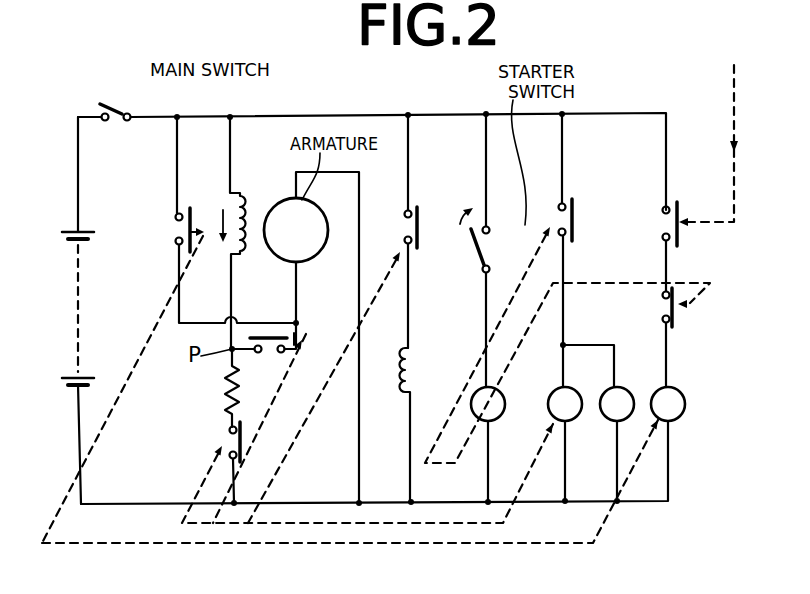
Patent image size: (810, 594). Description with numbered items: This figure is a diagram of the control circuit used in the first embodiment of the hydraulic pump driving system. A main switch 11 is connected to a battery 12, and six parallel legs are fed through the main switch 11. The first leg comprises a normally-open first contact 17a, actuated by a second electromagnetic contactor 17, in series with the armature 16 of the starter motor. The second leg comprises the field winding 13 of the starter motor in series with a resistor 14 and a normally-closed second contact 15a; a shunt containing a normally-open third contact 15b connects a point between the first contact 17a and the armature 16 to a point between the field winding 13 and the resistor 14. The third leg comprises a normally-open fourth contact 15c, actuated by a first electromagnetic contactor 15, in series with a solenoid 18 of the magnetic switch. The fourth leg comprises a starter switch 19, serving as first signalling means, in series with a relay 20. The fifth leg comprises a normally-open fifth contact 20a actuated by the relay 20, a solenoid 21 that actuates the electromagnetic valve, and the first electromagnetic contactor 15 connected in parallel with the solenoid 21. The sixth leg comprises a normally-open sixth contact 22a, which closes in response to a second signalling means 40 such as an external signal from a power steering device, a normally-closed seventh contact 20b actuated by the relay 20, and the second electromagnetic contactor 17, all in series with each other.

The main switch 11 is at (119, 101).
The battery 12 is at (73, 230).
The field winding 13 is at (229, 195).
The resistor 14 is at (229, 385).
The first electromagnetic contactor 15 is at (576, 417).
The second contact 15a is at (232, 445).
The third contact 15b is at (268, 353).
The fourth contact 15c is at (403, 218).
The armature 16 is at (287, 203).
The second electromagnetic contactor 17 is at (685, 415).
The first contact 17a is at (178, 238).
The solenoid 18 is at (412, 374).
The starter switch 19 is at (478, 258).
The relay 20 is at (504, 402).
The fifth contact 20a is at (576, 228).
The seventh contact 20b is at (676, 310).
The solenoid 21 is at (628, 413).
The sixth contact 22a is at (660, 215).
The second signalling means 40 is at (714, 133).